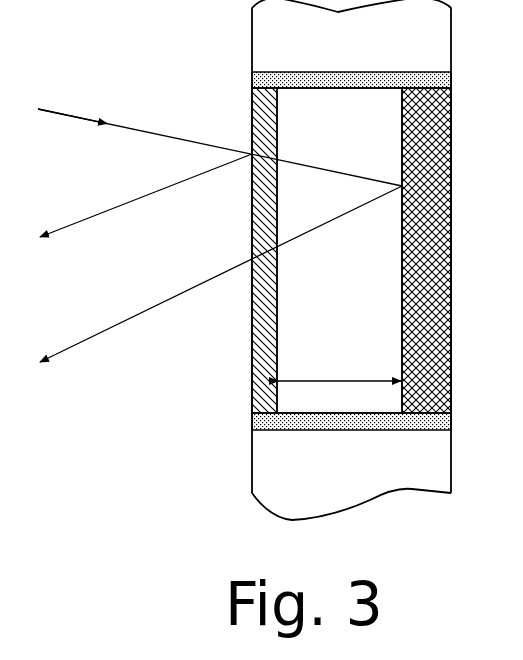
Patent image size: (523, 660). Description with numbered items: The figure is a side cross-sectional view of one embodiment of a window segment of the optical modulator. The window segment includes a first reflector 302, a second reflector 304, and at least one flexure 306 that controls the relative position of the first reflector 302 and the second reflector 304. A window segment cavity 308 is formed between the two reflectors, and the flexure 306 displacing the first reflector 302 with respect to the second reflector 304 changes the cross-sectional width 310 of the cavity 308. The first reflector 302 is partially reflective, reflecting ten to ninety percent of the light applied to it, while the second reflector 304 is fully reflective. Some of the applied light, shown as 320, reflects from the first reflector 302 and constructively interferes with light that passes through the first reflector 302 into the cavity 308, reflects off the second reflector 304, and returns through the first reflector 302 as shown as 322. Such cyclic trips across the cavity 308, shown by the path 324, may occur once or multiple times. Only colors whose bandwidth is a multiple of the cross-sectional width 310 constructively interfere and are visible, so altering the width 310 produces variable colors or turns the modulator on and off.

The first reflector 302 is at (252, 103).
The second reflector 304 is at (410, 158).
The flexure 306 is at (347, 75).
The window segment cavity 308 is at (326, 273).
The cross-sectional width 310 is at (350, 380).
The reflected light 320 is at (145, 198).
The returned light 322 is at (155, 307).
The path 324 is at (350, 210).